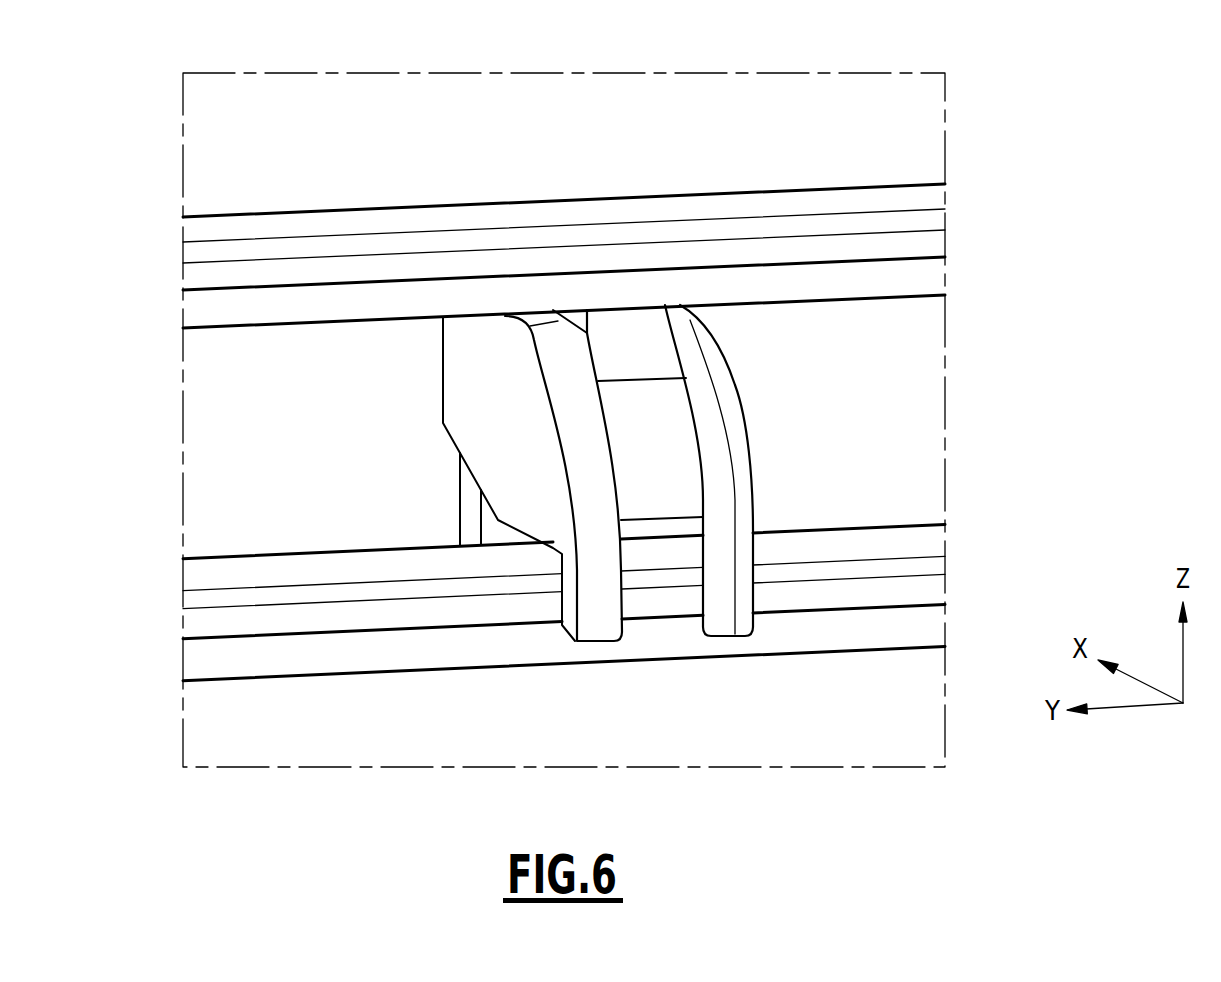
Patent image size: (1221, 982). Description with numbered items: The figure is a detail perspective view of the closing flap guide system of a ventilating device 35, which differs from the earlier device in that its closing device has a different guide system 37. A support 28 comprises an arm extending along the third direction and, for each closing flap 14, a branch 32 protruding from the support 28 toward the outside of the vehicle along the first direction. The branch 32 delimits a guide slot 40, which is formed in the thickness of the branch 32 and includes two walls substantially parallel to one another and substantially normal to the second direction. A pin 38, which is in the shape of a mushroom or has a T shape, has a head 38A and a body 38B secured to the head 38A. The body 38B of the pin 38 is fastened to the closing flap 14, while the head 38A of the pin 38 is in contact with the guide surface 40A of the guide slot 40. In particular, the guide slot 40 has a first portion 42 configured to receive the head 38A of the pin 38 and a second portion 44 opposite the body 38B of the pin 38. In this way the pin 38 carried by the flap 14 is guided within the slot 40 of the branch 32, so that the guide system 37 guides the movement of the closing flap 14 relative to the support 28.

The closing flap 14 is at (804, 184).
The support 28 is at (472, 503).
The branch 32 is at (478, 406).
The ventilating device 35 is at (473, 166).
The guide system 37 is at (390, 361).
The pin 38 is at (680, 327).
The head 38A is at (692, 350).
The body 38B is at (625, 333).
The guide slot 40 is at (683, 485).
The guide surface 40A is at (653, 455).
The first portion 42 is at (703, 388).
The second portion 44 is at (697, 349).